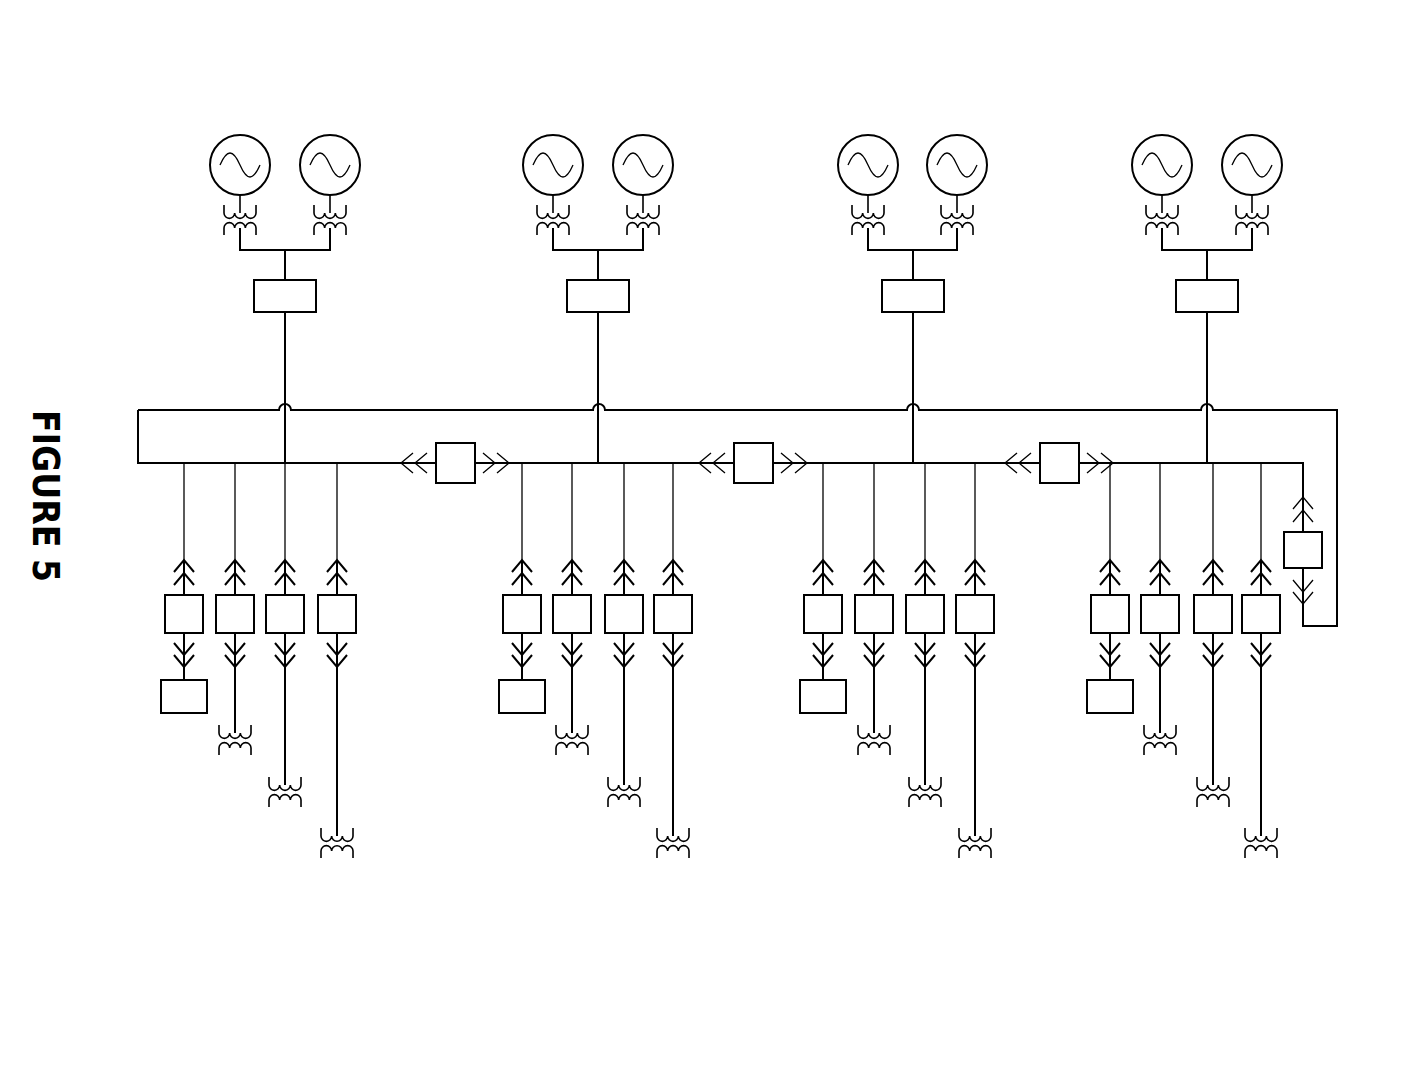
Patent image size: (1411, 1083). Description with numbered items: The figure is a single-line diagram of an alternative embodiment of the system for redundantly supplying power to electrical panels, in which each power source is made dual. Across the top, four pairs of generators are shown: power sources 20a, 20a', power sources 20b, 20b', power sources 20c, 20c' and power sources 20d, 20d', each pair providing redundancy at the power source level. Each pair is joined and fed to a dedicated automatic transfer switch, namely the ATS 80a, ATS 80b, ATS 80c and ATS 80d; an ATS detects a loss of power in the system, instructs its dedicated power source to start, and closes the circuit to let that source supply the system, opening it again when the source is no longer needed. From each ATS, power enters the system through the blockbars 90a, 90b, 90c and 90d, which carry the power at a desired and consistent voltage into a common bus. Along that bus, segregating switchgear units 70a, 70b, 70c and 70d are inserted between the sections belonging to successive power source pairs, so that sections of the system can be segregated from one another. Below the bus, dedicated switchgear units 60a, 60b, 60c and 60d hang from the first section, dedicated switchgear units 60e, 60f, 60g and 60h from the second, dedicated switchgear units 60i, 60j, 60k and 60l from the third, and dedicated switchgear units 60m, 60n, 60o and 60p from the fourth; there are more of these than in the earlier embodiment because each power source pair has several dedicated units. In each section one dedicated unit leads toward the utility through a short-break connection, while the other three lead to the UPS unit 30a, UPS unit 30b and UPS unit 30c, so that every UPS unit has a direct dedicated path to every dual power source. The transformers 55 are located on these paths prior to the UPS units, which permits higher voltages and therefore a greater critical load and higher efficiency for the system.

The power source 20a is at (207, 200).
The duplicate power source 20a' is at (381, 200).
The power source 20b is at (514, 153).
The duplicate power source 20b' is at (671, 138).
The power source 20c is at (833, 200).
The duplicate power source 20c' is at (1007, 200).
The power source 20d is at (1124, 153).
The duplicate power source 20d' is at (1281, 138).
The automatic transfer switch 80a is at (294, 320).
The automatic transfer switch 80b is at (607, 320).
The automatic transfer switch 80c is at (922, 320).
The automatic transfer switch 80d is at (1216, 320).
The blockbar 90a is at (267, 396).
The blockbar 90b is at (580, 396).
The blockbar 90c is at (895, 396).
The blockbar 90d is at (1189, 396).
The segregating switchgear unit 70a is at (450, 483).
The segregating switchgear unit 70b is at (753, 483).
The segregating switchgear unit 70c is at (1059, 483).
The segregating switchgear unit 70d is at (1322, 543).
The dedicated switchgear unit 60a is at (179, 610).
The dedicated switchgear unit 60b is at (231, 634).
The dedicated switchgear unit 60c is at (285, 660).
The dedicated switchgear unit 60d is at (335, 686).
The dedicated switchgear unit 60e is at (517, 610).
The dedicated switchgear unit 60f is at (568, 634).
The dedicated switchgear unit 60g is at (624, 660).
The dedicated switchgear unit 60h is at (675, 686).
The dedicated switchgear unit 60i is at (818, 610).
The dedicated switchgear unit 60j is at (870, 634).
The dedicated switchgear unit 60k is at (925, 660).
The dedicated switchgear unit 60l is at (977, 686).
The dedicated switchgear unit 60m is at (1105, 610).
The dedicated switchgear unit 60n is at (1156, 634).
The dedicated switchgear unit 60o is at (1212, 660).
The dedicated switchgear unit 60p is at (1257, 686).
The UPS unit 30a is at (231, 765).
The UPS unit 30b is at (285, 817).
The UPS unit 30c is at (335, 868).
The transformer 55 is at (1300, 827).